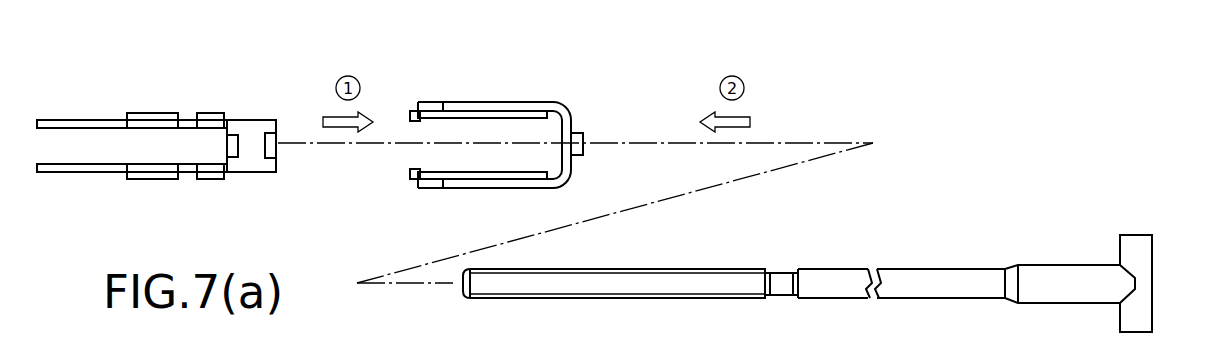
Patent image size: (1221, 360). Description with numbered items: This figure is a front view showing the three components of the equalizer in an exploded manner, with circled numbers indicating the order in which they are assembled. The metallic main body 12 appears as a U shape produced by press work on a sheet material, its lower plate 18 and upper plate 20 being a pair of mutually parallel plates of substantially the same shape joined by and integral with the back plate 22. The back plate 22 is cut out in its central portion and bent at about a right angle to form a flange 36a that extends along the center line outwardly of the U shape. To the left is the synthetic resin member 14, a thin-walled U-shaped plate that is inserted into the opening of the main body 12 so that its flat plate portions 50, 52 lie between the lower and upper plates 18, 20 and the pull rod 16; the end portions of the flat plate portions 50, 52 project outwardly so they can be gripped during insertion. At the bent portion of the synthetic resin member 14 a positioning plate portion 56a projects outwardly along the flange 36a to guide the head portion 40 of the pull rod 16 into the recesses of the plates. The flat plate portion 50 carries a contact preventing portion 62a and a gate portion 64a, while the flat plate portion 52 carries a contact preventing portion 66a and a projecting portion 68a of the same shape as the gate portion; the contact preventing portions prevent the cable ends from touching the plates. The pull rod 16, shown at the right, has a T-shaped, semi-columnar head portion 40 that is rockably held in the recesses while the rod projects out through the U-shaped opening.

The main body 12 is at (558, 73).
The synthetic resin member 14 is at (213, 76).
The pull rod 16 is at (927, 283).
The lower plate 18 is at (497, 184).
The upper plate 20 is at (483, 105).
The back plate 22 is at (567, 167).
The flange 36a is at (585, 134).
The head portion 40 is at (1140, 257).
The flat plate portion 50 is at (97, 174).
The flat plate portion 52 is at (90, 121).
The positioning plate portion 56a is at (255, 165).
The contact preventing portion 62a is at (209, 179).
The gate portion 64a is at (147, 179).
The contact preventing portion 66a is at (208, 113).
The projecting portion 68a is at (147, 113).